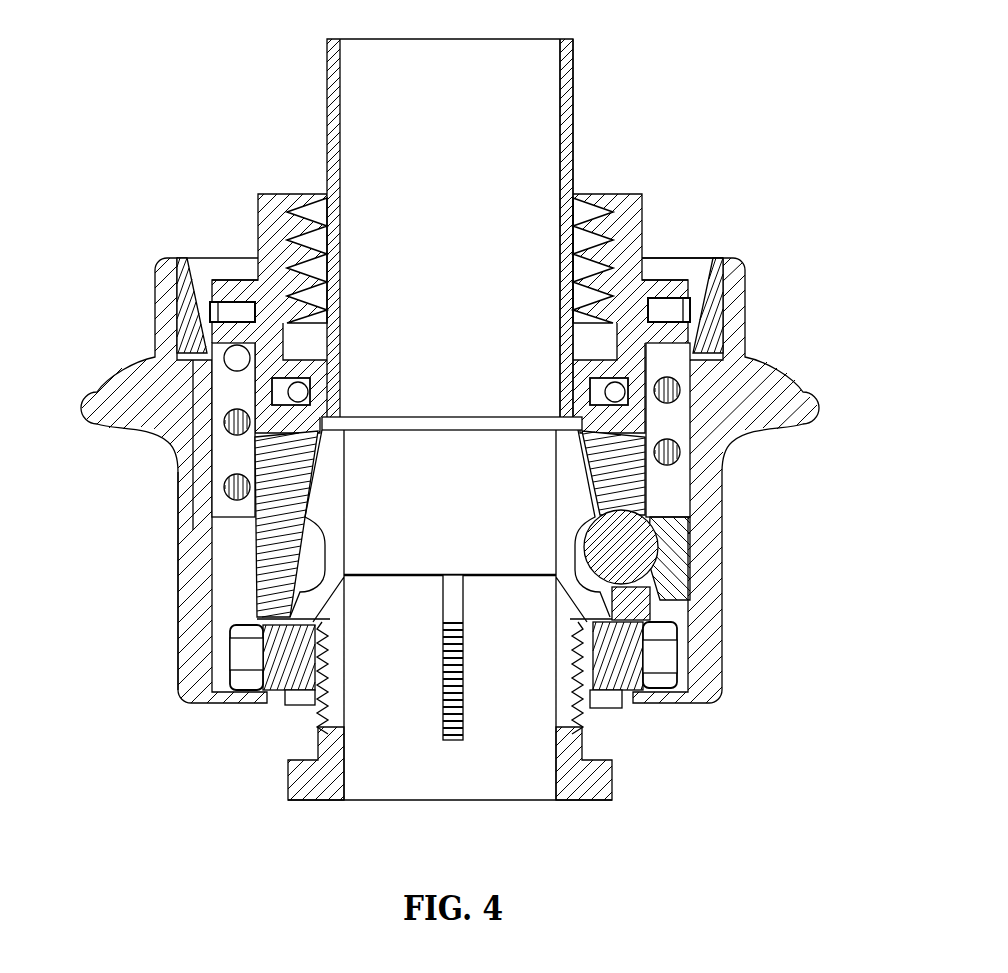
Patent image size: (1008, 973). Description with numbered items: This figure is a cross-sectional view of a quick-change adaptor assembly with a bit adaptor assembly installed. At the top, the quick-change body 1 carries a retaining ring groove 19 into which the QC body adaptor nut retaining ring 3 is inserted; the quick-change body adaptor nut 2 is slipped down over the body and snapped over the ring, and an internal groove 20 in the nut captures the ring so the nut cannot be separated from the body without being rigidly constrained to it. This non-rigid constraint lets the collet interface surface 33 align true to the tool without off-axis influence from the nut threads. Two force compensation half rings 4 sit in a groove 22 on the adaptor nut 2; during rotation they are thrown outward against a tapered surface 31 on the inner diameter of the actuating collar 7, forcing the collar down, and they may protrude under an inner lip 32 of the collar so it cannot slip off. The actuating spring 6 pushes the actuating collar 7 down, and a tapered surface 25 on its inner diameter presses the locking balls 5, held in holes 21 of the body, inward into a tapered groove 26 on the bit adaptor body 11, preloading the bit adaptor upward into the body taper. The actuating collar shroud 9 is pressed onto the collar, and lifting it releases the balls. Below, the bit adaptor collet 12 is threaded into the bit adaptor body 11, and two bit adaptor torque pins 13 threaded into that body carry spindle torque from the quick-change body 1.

The quick-change body 1 is at (578, 60).
The quick-change body adaptor nut 2 is at (256, 218).
The QC body adaptor nut retaining ring 3 is at (703, 362).
The force compensation half rings 4 is at (664, 306).
The locking balls 5 is at (635, 568).
The actuating spring 6 is at (215, 482).
The actuating collar 7 is at (562, 580).
The actuating collar shroud 9 is at (178, 656).
The bit adaptor body 11 is at (593, 612).
The bit adaptor collet 12 is at (620, 782).
The bit adaptor torque pins 13 is at (270, 692).
The retaining ring groove 19 is at (289, 396).
The internal groove 20 is at (286, 401).
The holes 21 is at (660, 520).
The groove 22 is at (207, 345).
The tapered surface 25 is at (245, 553).
The tapered groove 26 is at (243, 577).
The tapered surface 31 is at (716, 335).
The inner lip 32 is at (700, 276).
The collet interface surface 33 is at (578, 128).